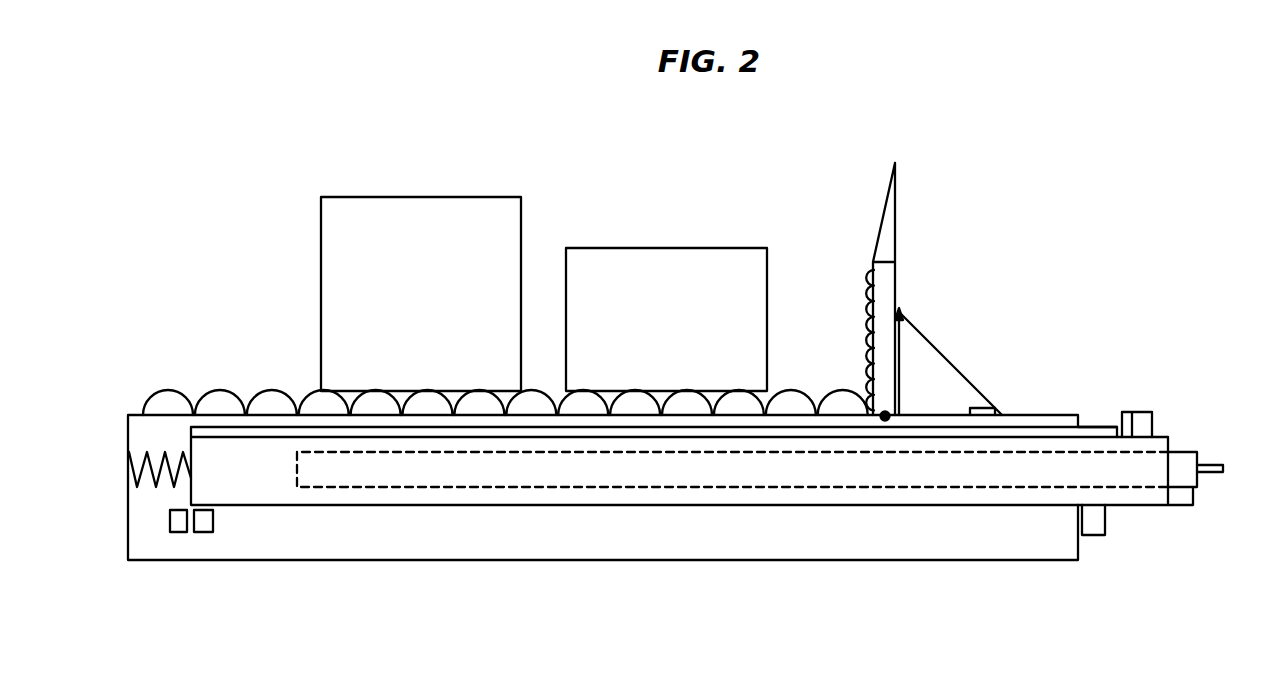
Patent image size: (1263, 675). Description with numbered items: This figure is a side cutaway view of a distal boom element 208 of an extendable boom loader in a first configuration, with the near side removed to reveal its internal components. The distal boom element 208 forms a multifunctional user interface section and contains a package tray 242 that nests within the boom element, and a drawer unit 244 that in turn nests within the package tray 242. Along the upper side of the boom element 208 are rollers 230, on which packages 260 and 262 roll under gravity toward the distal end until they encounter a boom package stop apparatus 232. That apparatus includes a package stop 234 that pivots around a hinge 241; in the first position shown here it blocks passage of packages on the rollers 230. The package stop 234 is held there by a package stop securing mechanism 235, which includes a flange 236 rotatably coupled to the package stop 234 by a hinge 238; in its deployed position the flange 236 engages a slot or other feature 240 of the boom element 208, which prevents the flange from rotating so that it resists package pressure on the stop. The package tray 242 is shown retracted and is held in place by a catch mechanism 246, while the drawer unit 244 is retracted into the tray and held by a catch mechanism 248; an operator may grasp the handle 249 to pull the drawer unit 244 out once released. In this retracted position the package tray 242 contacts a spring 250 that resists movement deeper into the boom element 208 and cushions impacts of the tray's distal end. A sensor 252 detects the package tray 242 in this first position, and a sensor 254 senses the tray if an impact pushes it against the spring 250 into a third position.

The distal boom element 208 is at (445, 561).
The rollers 230 is at (273, 368).
The boom package stop apparatus 232 is at (868, 284).
The package stop 234 is at (897, 248).
The package stop securing mechanism 235 is at (1030, 311).
The flange 236 is at (950, 358).
The hinge 238 is at (900, 312).
The slot or other feature 240 is at (983, 408).
The hinge 241 is at (885, 415).
The package tray 242 is at (612, 506).
The drawer unit 244 is at (743, 489).
The catch mechanism 246 is at (1092, 535).
The catch mechanism 248 is at (1182, 505).
The handle 249 is at (1208, 460).
The spring 250 is at (130, 452).
The sensor 252 is at (203, 532).
The sensor 254 is at (178, 532).
The package 260 is at (402, 305).
The package 262 is at (651, 328).